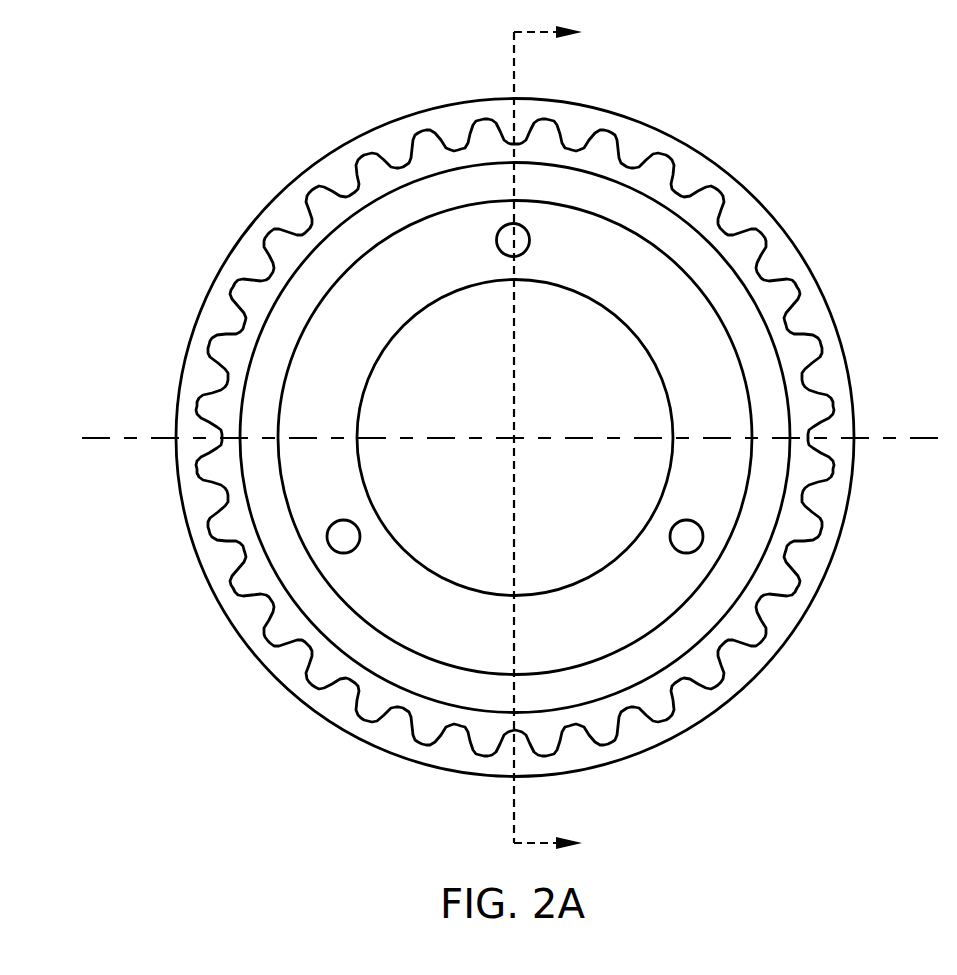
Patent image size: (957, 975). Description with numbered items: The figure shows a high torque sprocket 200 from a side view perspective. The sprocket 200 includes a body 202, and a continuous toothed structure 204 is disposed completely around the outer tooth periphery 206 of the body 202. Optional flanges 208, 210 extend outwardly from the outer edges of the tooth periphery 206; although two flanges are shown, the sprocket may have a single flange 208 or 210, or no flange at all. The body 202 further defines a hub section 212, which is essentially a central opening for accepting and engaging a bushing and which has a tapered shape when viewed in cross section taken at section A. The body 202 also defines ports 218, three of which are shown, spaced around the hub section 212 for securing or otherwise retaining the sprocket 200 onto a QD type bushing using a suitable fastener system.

The sprocket 200 is at (515, 439).
The body 202 is at (353, 230).
The continuous toothed structure 204 is at (210, 527).
The outer tooth periphery 206 is at (546, 441).
The flange 208 is at (546, 438).
The flange 210 is at (808, 595).
The hub section 212 is at (595, 381).
The ports 218 is at (497, 244).